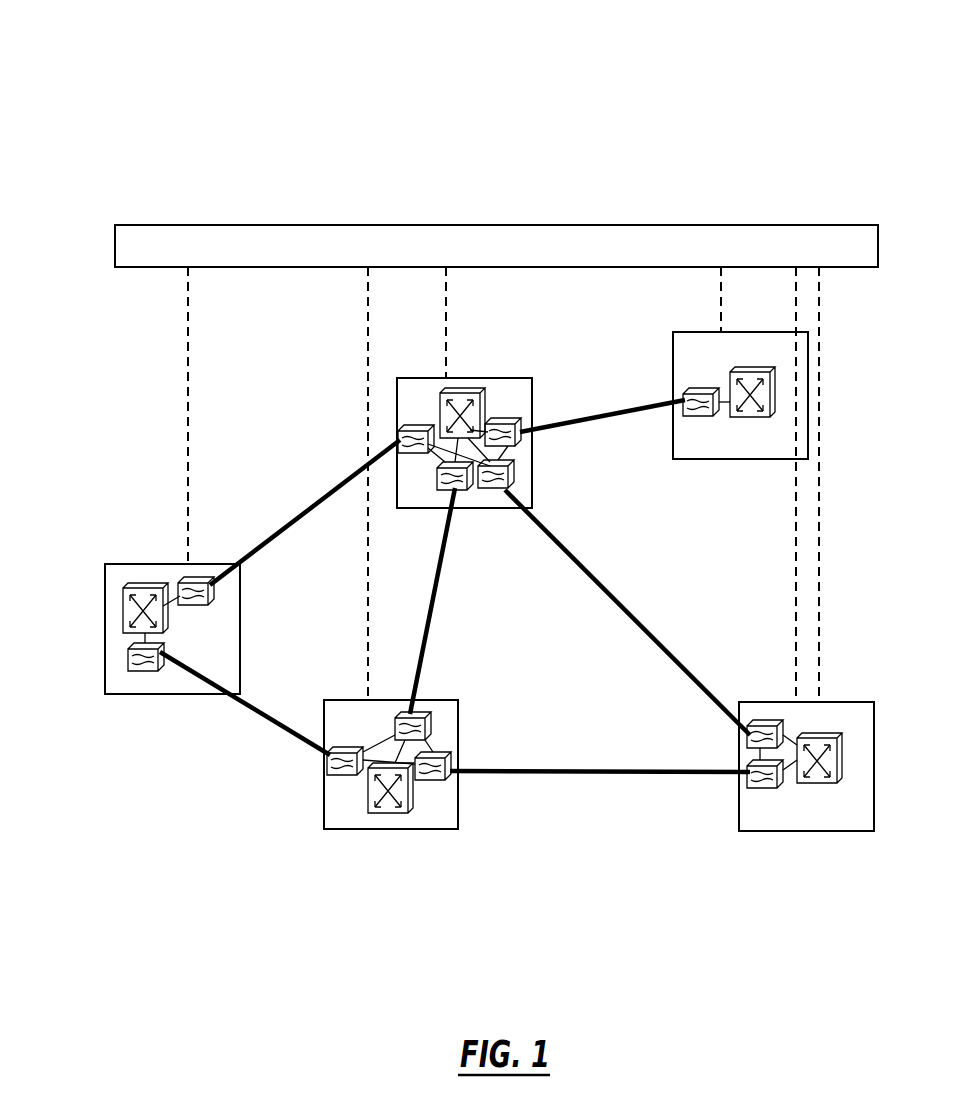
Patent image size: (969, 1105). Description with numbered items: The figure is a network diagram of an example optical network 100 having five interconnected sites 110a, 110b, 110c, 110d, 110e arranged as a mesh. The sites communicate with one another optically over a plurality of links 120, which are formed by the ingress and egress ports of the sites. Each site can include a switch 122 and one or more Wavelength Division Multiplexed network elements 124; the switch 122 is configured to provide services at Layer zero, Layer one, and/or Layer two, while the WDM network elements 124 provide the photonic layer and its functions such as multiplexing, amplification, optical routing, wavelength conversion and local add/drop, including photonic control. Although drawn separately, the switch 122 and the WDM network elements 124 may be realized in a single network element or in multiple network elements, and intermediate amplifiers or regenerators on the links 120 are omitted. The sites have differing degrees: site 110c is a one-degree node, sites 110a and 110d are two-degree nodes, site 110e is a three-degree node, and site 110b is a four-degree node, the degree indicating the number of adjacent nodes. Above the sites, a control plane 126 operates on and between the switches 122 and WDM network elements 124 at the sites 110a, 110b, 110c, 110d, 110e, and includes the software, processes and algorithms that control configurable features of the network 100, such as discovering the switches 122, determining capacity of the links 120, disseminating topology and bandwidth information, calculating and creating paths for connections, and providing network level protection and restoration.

The optical network 100 is at (570, 50).
The control plane 126 is at (640, 225).
The site 110a is at (105, 662).
The site 110b is at (500, 378).
The site 110c is at (751, 405).
The site 110d is at (782, 831).
The site 110e is at (324, 815).
The links 120 is at (300, 518).
The switch 122 is at (757, 367).
The Wavelength Division Multiplexed (WDM) network element 124 is at (703, 388).